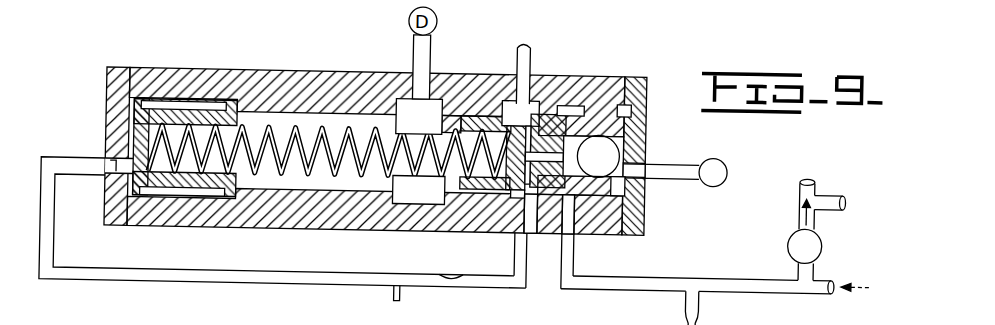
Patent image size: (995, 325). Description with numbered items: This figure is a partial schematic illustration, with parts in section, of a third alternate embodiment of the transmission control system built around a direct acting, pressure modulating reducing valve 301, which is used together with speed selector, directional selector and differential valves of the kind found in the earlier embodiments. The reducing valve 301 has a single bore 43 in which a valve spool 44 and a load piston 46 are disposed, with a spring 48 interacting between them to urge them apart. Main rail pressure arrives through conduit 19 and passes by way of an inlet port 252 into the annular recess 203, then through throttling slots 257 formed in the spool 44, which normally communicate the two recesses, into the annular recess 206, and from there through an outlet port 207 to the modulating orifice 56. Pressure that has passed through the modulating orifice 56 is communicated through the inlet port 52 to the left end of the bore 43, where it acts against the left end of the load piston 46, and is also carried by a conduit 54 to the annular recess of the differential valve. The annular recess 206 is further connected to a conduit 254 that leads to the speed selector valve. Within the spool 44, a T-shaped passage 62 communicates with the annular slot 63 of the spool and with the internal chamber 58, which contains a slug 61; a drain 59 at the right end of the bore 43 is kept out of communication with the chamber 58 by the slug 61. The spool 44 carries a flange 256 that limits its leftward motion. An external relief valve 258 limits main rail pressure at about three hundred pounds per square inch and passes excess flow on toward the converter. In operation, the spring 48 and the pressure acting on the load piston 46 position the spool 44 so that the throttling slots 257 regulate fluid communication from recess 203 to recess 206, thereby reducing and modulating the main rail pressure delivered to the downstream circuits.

The direct acting pressure modulating reducing valve 301 is at (100, 76).
The load piston 46 is at (181, 110).
The spring 48 is at (268, 132).
The inlet port 52 is at (106, 157).
The bore 43 is at (296, 183).
The conduit 254 is at (517, 46).
The annular recess 206 is at (510, 92).
The throttling slots 257 is at (548, 110).
The annular recess 203 is at (570, 97).
The valve spool 44 is at (632, 101).
The slug 61 is at (647, 138).
The drain 59 is at (658, 154).
The T-shaped passage 62 is at (593, 156).
The flange 256 is at (647, 190).
The internal chamber 58 is at (647, 218).
The inlet port 252 is at (578, 240).
The annular slot 63 is at (515, 192).
The outlet port 207 is at (516, 238).
The conduit 54 is at (398, 292).
The modulating orifice 56 is at (457, 282).
The conduit 19 is at (746, 267).
The external relief valve 258 is at (795, 232).